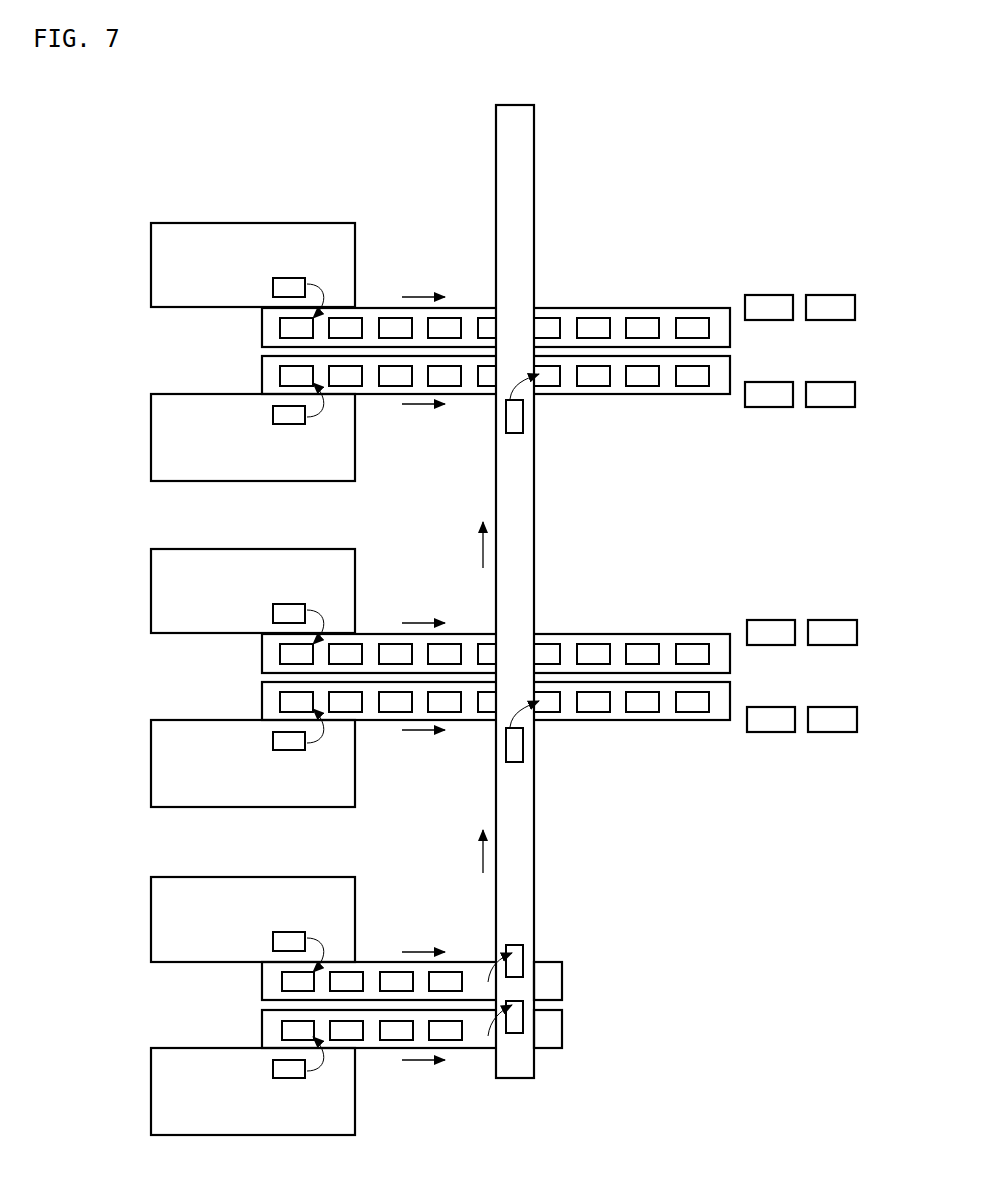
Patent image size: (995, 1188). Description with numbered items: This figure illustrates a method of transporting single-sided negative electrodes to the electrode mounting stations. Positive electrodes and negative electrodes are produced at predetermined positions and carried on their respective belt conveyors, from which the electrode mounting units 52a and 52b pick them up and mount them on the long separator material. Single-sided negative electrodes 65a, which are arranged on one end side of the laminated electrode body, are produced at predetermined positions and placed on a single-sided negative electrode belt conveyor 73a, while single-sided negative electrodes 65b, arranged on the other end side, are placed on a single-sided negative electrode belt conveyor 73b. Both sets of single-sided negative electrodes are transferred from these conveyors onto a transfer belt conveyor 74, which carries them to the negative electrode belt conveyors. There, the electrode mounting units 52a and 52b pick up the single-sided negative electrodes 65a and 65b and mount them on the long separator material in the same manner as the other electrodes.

The electrode mounting unit 52a is at (772, 295).
The electrode mounting unit 52b is at (832, 295).
The single-sided negative electrode 65a is at (357, 972).
The single-sided negative electrode 65b is at (358, 1040).
The single-sided negative electrode belt conveyor 73a is at (553, 962).
The single-sided negative electrode belt conveyor 73b is at (553, 1050).
The transfer belt conveyor 74 is at (534, 880).